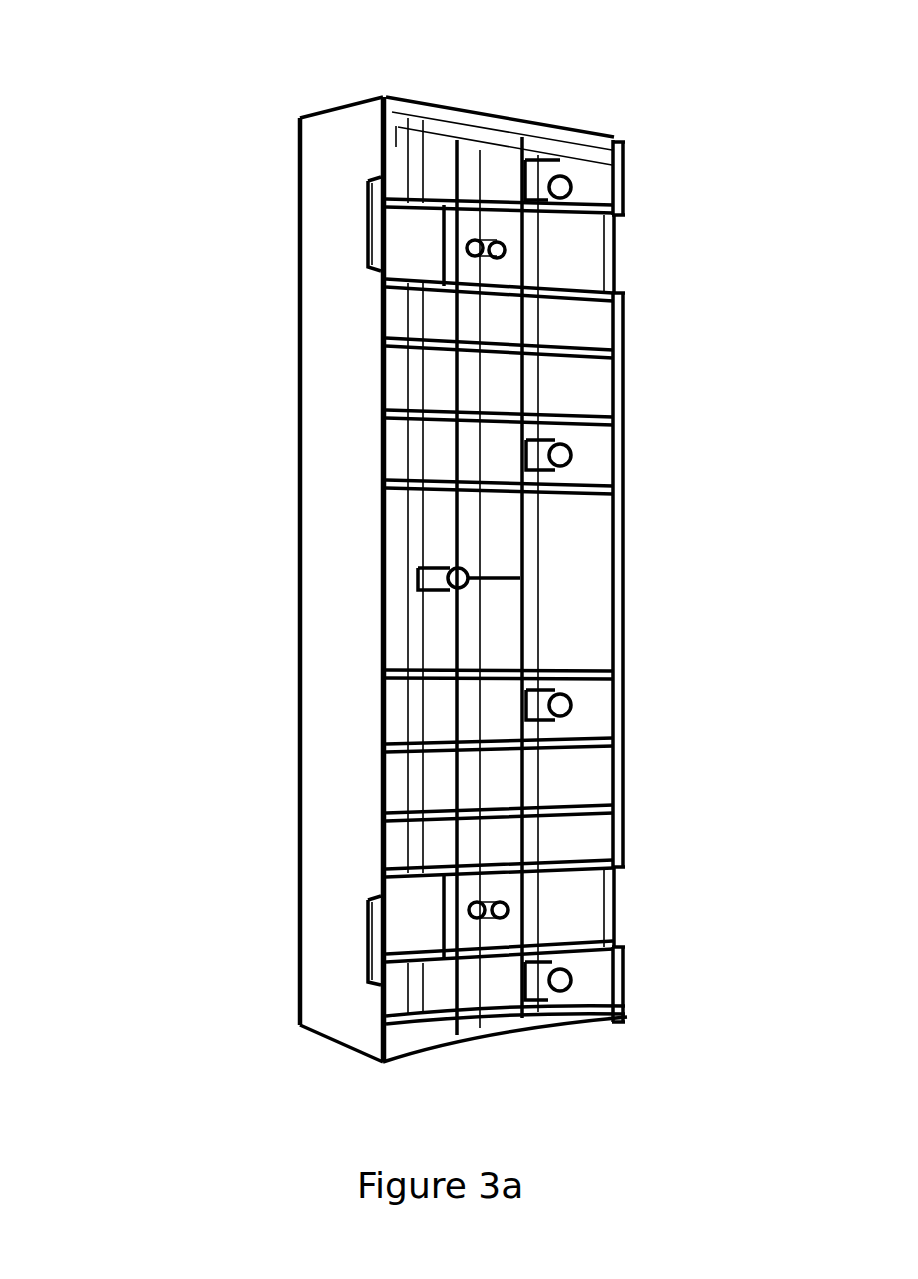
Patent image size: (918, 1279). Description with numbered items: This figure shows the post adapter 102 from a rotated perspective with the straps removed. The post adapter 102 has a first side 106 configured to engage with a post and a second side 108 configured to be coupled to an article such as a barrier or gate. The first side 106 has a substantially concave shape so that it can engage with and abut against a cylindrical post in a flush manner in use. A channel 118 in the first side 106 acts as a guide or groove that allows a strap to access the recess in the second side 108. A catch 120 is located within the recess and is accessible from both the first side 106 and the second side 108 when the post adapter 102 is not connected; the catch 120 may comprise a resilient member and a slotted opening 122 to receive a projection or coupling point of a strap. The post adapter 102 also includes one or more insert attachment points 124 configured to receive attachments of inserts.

The post adapter 102 is at (140, 119).
The first side 106 is at (675, 540).
The second side 108 is at (238, 553).
The channel 118 is at (636, 248).
The catch 120 is at (412, 235).
The slotted opening 122 is at (482, 247).
The insert attachment point 124 is at (558, 181).